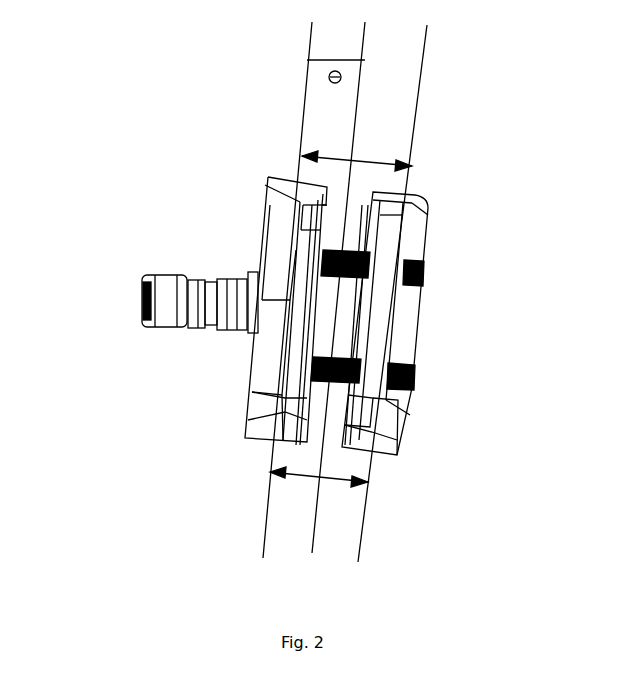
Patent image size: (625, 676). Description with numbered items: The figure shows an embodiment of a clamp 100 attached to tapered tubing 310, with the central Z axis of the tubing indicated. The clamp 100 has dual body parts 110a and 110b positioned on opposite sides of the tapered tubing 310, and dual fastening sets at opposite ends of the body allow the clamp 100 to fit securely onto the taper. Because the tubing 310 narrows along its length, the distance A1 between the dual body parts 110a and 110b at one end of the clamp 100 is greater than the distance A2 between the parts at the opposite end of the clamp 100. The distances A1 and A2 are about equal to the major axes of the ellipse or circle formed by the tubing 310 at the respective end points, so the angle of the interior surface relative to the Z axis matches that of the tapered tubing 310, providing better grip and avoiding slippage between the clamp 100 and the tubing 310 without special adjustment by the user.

The clamp 100 is at (183, 242).
The body part 110a is at (258, 198).
The body part 110b is at (443, 217).
The tapered tubing 310 is at (433, 45).
The distance A1 is at (370, 148).
The distance A2 is at (320, 484).